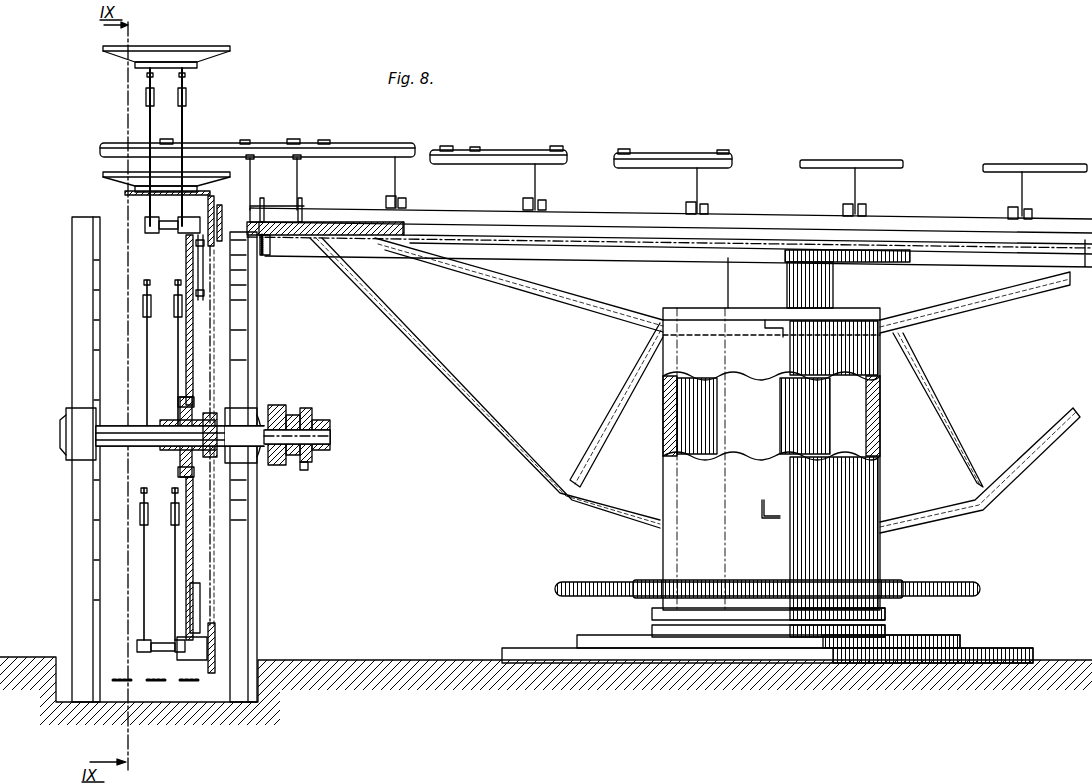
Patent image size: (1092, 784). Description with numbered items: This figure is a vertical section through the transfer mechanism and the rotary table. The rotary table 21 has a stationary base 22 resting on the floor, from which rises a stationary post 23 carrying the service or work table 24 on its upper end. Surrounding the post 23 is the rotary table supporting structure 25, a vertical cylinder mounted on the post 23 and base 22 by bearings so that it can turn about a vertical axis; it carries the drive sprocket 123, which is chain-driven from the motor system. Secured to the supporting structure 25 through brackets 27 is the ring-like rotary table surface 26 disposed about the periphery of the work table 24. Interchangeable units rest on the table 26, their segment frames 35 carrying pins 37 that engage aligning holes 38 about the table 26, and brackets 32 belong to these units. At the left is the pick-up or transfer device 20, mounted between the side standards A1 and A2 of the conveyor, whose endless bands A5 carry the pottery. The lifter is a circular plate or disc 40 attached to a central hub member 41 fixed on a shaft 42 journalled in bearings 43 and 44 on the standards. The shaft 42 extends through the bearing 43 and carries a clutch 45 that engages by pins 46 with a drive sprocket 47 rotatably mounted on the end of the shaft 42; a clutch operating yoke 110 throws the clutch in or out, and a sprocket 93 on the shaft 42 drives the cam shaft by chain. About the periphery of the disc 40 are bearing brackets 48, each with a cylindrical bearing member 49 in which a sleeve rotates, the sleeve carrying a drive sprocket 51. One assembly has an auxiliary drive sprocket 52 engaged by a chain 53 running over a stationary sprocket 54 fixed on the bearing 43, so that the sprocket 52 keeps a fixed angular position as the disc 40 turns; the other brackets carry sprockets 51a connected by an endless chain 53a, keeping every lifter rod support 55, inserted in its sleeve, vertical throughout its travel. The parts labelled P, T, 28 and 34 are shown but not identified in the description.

The platform P is at (199, 47).
The endless conveyor bands A5 is at (125, 193).
The cylindrical bearing member 49 is at (197, 222).
The bearing bracket 48 is at (193, 262).
The disc 40 is at (193, 546).
The auxiliary drive sprocket 52 is at (213, 212).
The drive sprocket 51 is at (222, 222).
The chain 53 is at (211, 370).
The endless chain 53a is at (215, 582).
The sprocket 51a is at (214, 630).
The pin 37 is at (258, 226).
The aligning hole 38 is at (265, 245).
The bracket 32 is at (251, 190).
The post 34 is at (263, 208).
The rail 28 is at (390, 151).
The segment frame 35 is at (474, 216).
The work table 24 is at (611, 232).
The ring-like rotary table surface 26 is at (360, 237).
The rotary table 21 is at (753, 182).
The table T is at (925, 167).
The bracket 27 is at (510, 290).
The stationary post 23 is at (820, 437).
The rotary table supporting structure 25 is at (690, 553).
The stationary base 22 is at (978, 660).
The drive sprocket 123 is at (592, 583).
The side standard A1 is at (72, 247).
The side standard A2 is at (245, 308).
The transfer device 20 is at (115, 329).
The bearing 44 is at (78, 414).
The shaft 42 is at (110, 425).
The central hub member 41 is at (172, 449).
The stationary sprocket 54 is at (207, 457).
The bearing 43 is at (242, 415).
The clutch operating yoke 110 is at (273, 406).
The clutch 45 is at (275, 464).
The pin 46 is at (306, 410).
The drive sprocket 47 is at (302, 466).
The sprocket 93 is at (313, 455).
The lifter rod support 55 is at (156, 642).